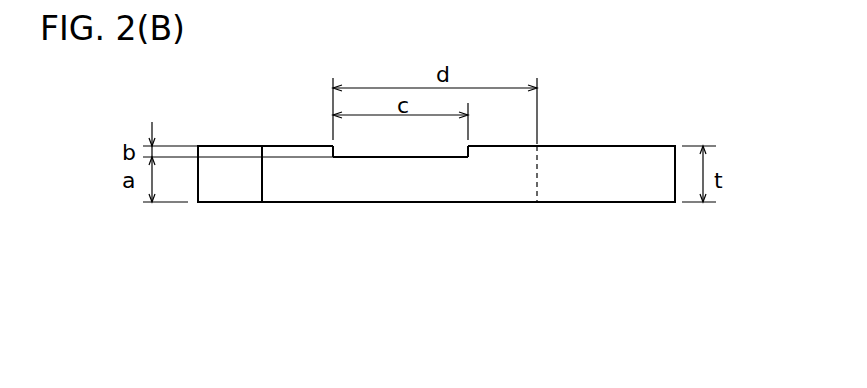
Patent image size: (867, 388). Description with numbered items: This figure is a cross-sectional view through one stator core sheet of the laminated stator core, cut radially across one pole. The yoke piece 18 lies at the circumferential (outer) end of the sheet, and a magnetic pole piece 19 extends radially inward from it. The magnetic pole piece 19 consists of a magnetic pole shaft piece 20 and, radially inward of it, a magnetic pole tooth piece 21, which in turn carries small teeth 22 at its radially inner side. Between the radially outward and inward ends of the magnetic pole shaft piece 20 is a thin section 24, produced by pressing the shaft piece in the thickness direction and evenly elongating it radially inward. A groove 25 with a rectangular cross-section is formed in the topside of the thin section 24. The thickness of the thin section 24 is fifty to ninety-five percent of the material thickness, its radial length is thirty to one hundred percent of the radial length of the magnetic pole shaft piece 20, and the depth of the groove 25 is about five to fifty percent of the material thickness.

The yoke piece 18 is at (573, 153).
The magnetic pole piece 19 is at (483, 295).
The magnetic pole shaft piece 20 is at (488, 203).
The magnetic pole tooth piece 21 is at (295, 203).
The small teeth 22 is at (215, 196).
The thin section 24 is at (447, 181).
The groove 25 is at (395, 157).